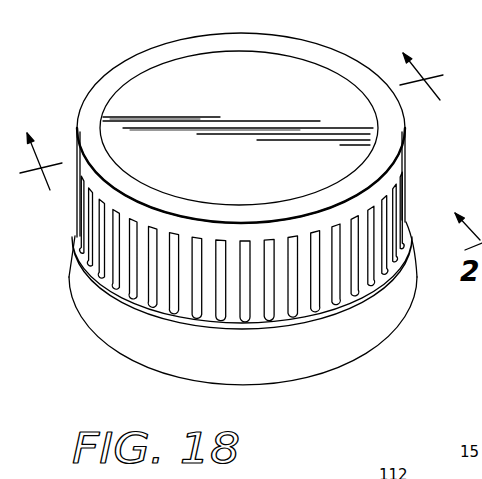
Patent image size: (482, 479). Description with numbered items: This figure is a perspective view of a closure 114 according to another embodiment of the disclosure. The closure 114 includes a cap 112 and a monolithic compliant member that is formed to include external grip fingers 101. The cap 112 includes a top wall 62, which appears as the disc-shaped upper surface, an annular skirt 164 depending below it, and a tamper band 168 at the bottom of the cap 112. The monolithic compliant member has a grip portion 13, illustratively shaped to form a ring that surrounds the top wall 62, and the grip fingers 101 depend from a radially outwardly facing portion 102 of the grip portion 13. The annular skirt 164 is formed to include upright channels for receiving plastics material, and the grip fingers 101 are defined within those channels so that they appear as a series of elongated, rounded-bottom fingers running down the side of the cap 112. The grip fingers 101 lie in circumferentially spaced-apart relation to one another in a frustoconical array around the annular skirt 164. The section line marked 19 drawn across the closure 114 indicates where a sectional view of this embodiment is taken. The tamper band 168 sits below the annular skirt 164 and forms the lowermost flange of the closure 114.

The grip portion 13 is at (353, 53).
The top wall 62 is at (273, 80).
The closure 114 is at (100, 82).
The radially outwardly facing portion 102 is at (130, 207).
The annular skirt 164 is at (407, 208).
The grip fingers 101 is at (175, 307).
The cap 112 is at (68, 292).
The tamper band 168 is at (283, 362).
The section line 19- 19 is at (240, 140).